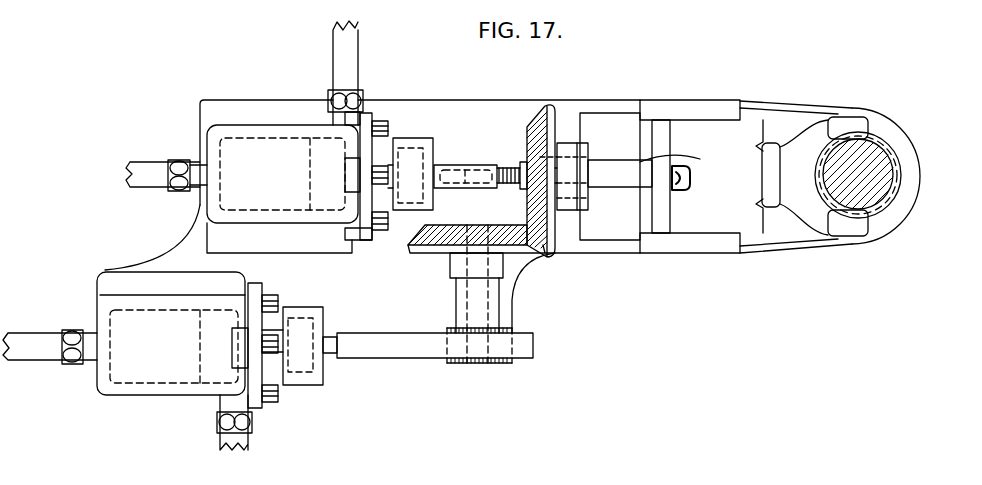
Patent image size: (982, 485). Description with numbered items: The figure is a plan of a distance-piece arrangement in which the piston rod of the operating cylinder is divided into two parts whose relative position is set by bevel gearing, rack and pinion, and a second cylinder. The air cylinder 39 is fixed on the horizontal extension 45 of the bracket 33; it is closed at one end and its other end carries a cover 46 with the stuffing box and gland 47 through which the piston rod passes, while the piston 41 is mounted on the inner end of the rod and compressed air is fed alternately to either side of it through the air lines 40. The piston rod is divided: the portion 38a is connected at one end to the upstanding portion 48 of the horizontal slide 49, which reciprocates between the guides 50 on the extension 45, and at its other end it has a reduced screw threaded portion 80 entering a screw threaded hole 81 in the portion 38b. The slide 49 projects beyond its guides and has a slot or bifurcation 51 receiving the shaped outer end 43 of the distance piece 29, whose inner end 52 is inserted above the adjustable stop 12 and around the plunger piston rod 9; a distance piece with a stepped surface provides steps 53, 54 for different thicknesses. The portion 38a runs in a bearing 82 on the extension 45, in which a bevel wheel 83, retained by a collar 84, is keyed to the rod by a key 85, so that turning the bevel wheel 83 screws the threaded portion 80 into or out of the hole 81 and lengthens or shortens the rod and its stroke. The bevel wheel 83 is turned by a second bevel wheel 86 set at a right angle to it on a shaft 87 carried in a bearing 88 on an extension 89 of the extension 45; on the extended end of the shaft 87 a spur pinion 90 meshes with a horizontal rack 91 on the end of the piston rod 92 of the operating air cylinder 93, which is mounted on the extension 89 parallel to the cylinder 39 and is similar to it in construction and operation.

The plunger piston rod 9 is at (878, 175).
The adjustable stop 12 is at (895, 162).
The distance piece 29 is at (804, 177).
The bracket 33 is at (893, 117).
The piston rod portion 38a is at (620, 188).
The piston rod portion 38b is at (492, 158).
The air cylinder 39 is at (240, 128).
The air lines 40 is at (335, 5).
The piston 41 is at (312, 170).
The outer end of distance piece 43 is at (770, 143).
The horizontal extension 45 is at (470, 100).
The cover 46 is at (366, 114).
The stuffing box and gland 47 is at (412, 138).
The upstanding portion of slide 48 is at (655, 134).
The horizontal slide 49 is at (733, 176).
The guides 50 is at (700, 100).
The slot or bifurcation 51 is at (754, 204).
The inner end of distance piece 52 is at (891, 226).
The step 53 is at (857, 235).
The step 54 is at (819, 223).
The reduced screw threaded portion 80 is at (509, 183).
The screw threaded hole 81 is at (460, 163).
The bearing 82 is at (565, 142).
The bevel wheel 83 is at (538, 105).
The collar 84 is at (588, 215).
The key 85 is at (697, 176).
The second bevel wheel 86 is at (409, 254).
The shaft 87 is at (487, 321).
The bearing 88 is at (456, 312).
The extension 89 is at (226, 249).
The spur pinion 90 is at (454, 363).
The horizontal rack 91 is at (533, 357).
The piston rod 92 is at (331, 386).
The operating air cylinder 93 is at (116, 393).